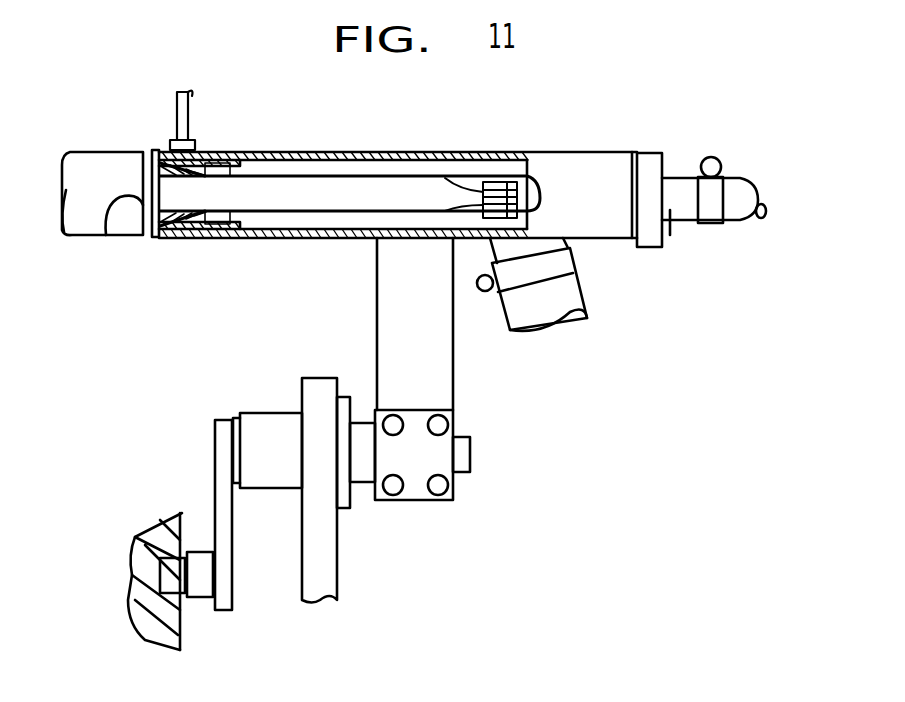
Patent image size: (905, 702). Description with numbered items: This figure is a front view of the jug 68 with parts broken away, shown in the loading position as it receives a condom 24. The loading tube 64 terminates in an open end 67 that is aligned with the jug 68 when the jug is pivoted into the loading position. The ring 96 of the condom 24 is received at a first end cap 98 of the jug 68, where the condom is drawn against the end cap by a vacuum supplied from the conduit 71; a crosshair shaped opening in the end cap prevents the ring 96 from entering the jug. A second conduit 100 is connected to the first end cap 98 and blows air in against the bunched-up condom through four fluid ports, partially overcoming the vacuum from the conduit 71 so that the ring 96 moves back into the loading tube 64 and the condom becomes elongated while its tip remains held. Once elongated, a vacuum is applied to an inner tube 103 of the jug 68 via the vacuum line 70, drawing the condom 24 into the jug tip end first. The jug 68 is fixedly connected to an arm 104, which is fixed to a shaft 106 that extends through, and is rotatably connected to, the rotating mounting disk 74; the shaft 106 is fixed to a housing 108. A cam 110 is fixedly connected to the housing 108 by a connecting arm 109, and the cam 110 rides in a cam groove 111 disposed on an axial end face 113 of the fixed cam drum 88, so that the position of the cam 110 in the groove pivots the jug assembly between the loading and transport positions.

The loading tube 64 is at (80, 160).
The open end 67 is at (110, 237).
The ring 96 is at (137, 157).
The first end cap 98 is at (162, 237).
The second conduit 100 is at (185, 110).
The jug 68 is at (370, 122).
The inner tube 103 is at (393, 180).
The condom 24 is at (445, 200).
The vacuum line 70 is at (742, 190).
The arm 104 is at (396, 272).
The conduit 71 is at (525, 320).
The shaft 106 is at (363, 468).
The rotating mounting disk 74 is at (323, 583).
The housing 108 is at (272, 425).
The connecting arm 109 is at (222, 452).
The cam 110 is at (168, 563).
The cam groove 111 is at (133, 573).
The fixed cam drum 88 is at (140, 623).
The axial end face 113 is at (180, 632).